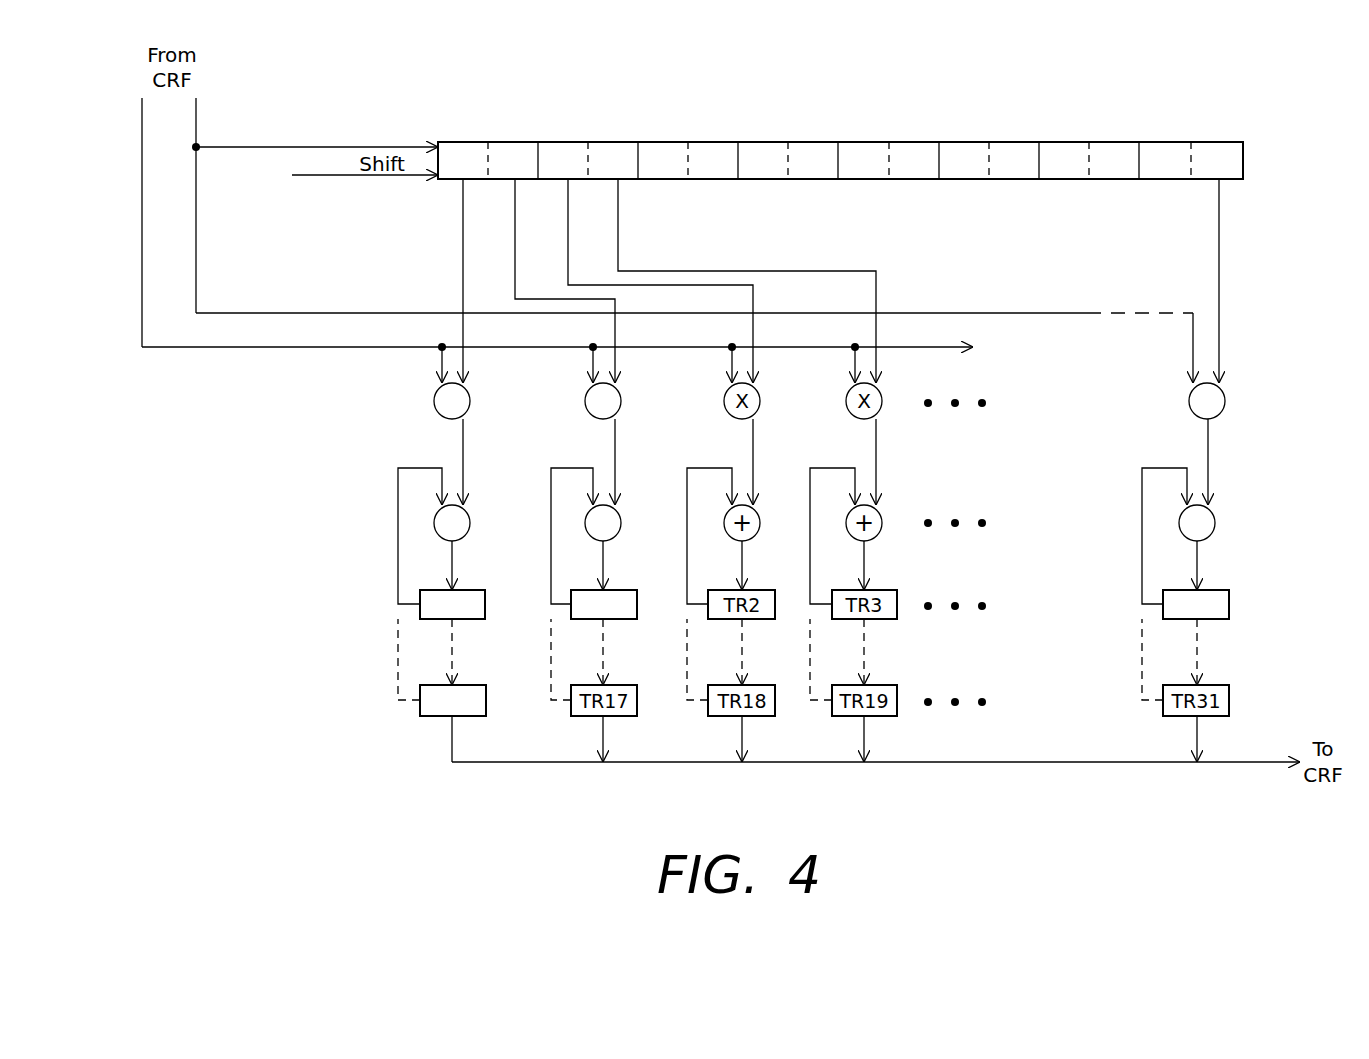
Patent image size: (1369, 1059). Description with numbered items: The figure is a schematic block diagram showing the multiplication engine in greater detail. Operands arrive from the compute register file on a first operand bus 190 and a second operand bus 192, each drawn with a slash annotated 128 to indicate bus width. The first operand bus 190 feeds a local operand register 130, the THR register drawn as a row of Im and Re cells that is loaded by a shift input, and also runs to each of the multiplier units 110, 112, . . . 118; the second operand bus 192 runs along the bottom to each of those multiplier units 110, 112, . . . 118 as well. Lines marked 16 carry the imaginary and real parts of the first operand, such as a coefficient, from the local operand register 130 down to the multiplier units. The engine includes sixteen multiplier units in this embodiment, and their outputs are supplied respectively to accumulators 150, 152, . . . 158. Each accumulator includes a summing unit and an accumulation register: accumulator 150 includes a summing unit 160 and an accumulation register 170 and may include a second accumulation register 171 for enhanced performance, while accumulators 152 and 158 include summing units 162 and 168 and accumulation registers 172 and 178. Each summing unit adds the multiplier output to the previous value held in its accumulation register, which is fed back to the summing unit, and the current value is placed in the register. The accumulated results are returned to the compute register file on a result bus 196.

The multiplier unit 110 is at (436, 395).
The multiplier unit 112 is at (587, 395).
The multiplier unit 118 is at (1225, 398).
The 128-bit data bus 128 is at (153, 253).
The local operand register 130 is at (1243, 150).
The 16-bit signal path 16 is at (578, 212).
The accumulator 150 is at (428, 771).
The accumulator 152 is at (593, 771).
The accumulator 158 is at (1190, 772).
The summing unit 160 is at (458, 539).
The summing unit 162 is at (609, 539).
The summing unit 168 is at (1215, 513).
The accumulation register 170 is at (463, 620).
The second accumulation register 171 is at (428, 717).
The accumulation register 172 is at (615, 620).
The accumulation register 178 is at (1229, 595).
The first operand bus 190 is at (197, 117).
The second operand bus 192 is at (142, 162).
The result bus 196 is at (1237, 762).